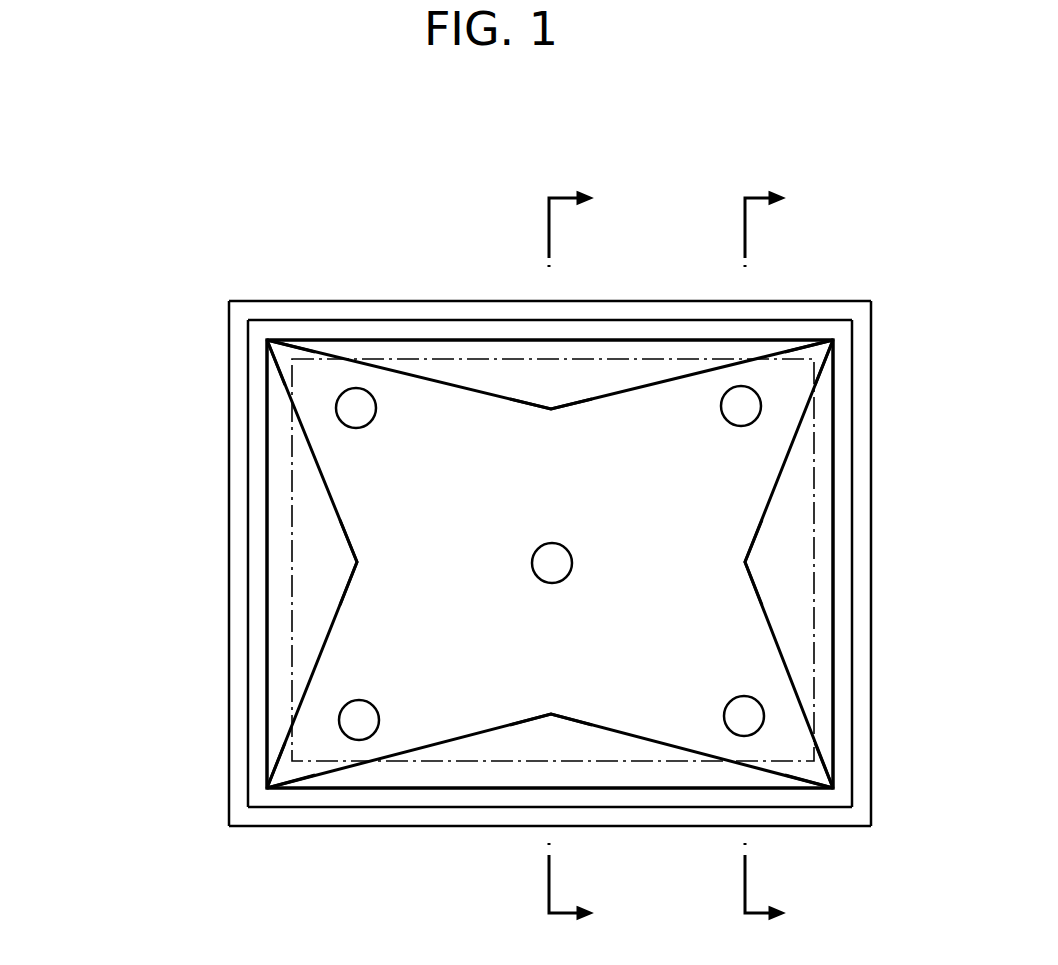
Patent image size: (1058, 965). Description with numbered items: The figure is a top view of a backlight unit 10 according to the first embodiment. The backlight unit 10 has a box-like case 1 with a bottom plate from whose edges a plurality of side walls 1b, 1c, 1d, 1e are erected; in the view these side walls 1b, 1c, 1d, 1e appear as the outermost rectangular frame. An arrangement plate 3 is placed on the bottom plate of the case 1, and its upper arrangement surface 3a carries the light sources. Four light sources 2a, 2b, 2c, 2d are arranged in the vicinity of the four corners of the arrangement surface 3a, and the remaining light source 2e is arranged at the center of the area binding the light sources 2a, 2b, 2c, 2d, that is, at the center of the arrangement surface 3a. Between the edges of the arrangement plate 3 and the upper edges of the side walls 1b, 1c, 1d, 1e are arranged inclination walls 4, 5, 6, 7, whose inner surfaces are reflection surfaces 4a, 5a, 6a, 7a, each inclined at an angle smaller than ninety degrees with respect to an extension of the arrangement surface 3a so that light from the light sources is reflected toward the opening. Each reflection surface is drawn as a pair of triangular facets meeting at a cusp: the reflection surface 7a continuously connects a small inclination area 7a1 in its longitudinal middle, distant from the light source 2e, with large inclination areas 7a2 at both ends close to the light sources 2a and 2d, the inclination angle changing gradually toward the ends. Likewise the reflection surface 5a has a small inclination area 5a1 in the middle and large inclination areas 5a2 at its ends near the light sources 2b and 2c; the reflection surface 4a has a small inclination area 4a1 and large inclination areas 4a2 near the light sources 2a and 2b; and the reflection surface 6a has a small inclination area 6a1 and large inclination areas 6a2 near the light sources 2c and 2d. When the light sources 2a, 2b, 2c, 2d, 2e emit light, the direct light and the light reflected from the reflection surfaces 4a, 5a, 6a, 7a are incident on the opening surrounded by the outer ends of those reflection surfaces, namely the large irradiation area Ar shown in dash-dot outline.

The backlight unit 10 is at (172, 356).
The case 1 is at (220, 471).
The side wall 1b is at (237, 645).
The side wall 1c is at (637, 815).
The side wall 1d is at (862, 657).
The side wall 1e is at (605, 301).
The light source 2a is at (375, 414).
The light source 2b is at (378, 708).
The light source 2c is at (725, 704).
The light source 2d is at (722, 413).
The light source 2e is at (532, 571).
The arrangement plate 3 is at (410, 724).
The arrangement surface 3a is at (603, 604).
The irradiation area Ar is at (813, 445).
The inclination wall 4 is at (247, 582).
The reflection surface 4a is at (273, 523).
The small inclination area 4a1 is at (327, 551).
The large inclination area 4a2 is at (278, 423).
The inclination wall 5 is at (458, 797).
The reflection surface 5a is at (583, 740).
The small inclination area 5a1 is at (527, 738).
The large inclination area 5a2 is at (317, 783).
The inclination wall 6 is at (842, 518).
The reflection surface 6a is at (793, 575).
The small inclination area 6a1 is at (773, 547).
The large inclination area 6a2 is at (823, 377).
The inclination wall 7 is at (400, 332).
The reflection surface 7a is at (463, 378).
The small inclination area 7a1 is at (573, 380).
The large inclination area 7a2 is at (330, 350).